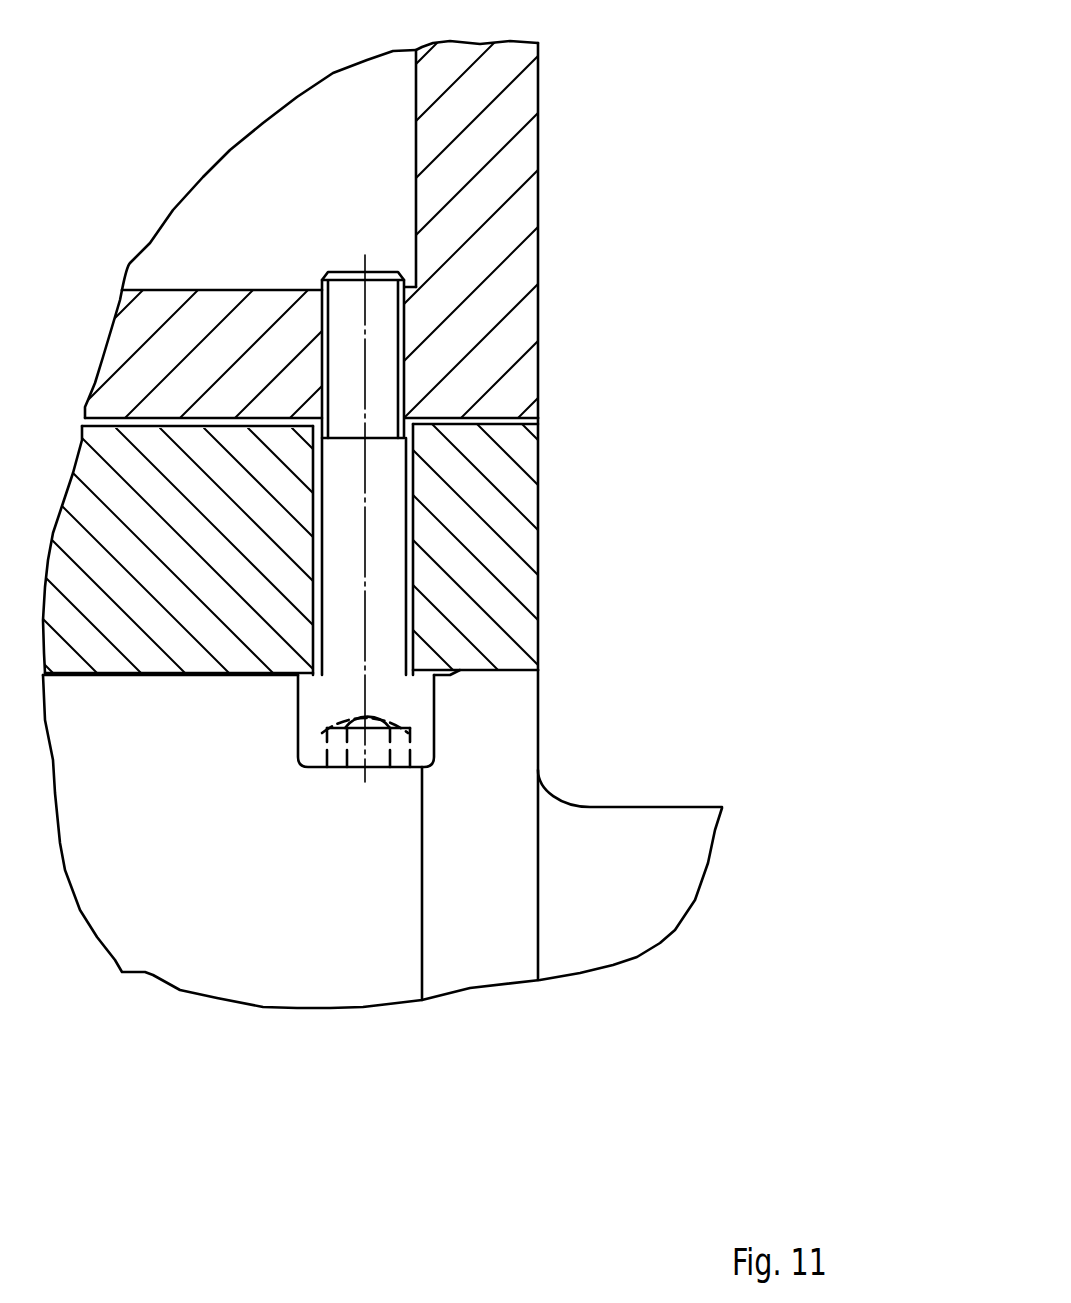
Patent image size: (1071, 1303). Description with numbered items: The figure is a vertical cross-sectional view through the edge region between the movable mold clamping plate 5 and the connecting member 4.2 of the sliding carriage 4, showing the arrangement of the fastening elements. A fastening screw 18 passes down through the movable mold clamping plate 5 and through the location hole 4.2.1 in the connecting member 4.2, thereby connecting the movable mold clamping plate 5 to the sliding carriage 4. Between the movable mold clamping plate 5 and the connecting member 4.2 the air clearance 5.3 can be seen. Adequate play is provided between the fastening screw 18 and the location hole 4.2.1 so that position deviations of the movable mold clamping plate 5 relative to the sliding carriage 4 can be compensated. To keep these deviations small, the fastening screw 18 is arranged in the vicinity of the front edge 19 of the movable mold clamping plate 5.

The front edge 19 is at (538, 84).
The movable mold clamping plate 5 is at (538, 195).
The air clearance 5.3 is at (538, 420).
The fastening screw 18 is at (385, 508).
The connecting member 4.2 is at (538, 527).
The sliding carriage 4 is at (538, 593).
The location hole 4.2.1 is at (418, 651).